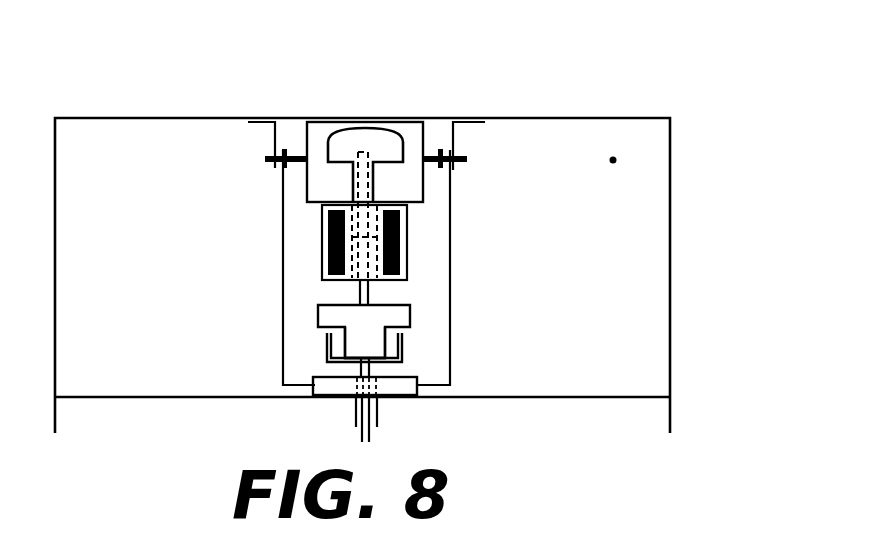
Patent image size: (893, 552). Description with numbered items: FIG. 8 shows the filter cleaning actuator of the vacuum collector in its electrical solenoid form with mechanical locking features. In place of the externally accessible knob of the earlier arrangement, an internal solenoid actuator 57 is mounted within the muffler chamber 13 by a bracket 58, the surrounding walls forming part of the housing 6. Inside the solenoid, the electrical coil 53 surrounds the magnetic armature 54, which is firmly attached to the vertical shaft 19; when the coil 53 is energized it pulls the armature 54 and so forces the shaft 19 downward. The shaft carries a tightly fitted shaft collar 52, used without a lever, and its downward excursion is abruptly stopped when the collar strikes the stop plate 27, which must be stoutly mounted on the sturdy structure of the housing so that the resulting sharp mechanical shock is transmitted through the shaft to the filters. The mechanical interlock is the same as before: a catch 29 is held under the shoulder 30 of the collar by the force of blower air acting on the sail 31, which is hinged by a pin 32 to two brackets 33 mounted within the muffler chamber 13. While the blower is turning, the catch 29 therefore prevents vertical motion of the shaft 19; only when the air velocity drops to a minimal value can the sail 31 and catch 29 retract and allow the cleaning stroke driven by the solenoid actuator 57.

The housing / enclosure 6 is at (672, 253).
The muffler chamber 13 is at (613, 160).
The vertical shaft 19 is at (368, 298).
The stop plate 27 is at (417, 391).
The catch 29 is at (330, 343).
The shoulder 30 is at (320, 333).
The sail 31 is at (283, 275).
The pin 32 is at (467, 158).
The brackets 33 is at (273, 135).
The shaft collar 52 is at (410, 322).
The electrical coil 53 is at (324, 236).
The magnetic armature 54 is at (335, 164).
The solenoid actuator 57 is at (408, 226).
The bracket 58 is at (427, 132).